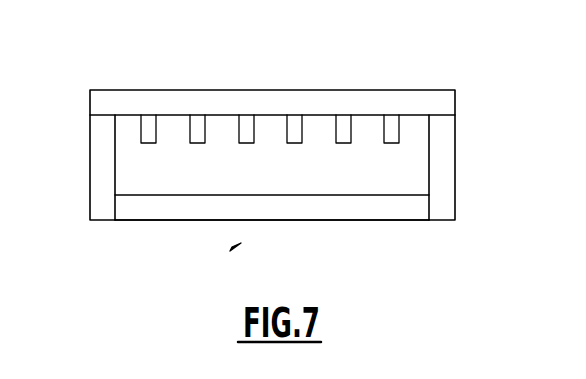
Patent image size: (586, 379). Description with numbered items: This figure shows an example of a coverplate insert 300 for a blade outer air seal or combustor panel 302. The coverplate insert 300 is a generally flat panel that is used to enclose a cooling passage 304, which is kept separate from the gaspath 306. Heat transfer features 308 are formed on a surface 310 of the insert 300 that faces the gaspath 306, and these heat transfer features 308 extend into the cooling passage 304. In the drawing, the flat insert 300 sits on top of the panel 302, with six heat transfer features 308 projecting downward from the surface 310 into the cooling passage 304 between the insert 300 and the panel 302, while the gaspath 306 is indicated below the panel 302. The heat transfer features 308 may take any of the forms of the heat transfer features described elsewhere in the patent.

The coverplate insert 300 is at (428, 90).
The BOAS or combustor panel 302 is at (402, 211).
The cooling passage 304 is at (406, 174).
The gaspath 306 is at (233, 247).
The heat transfer features 308 is at (195, 133).
The surface 310 is at (266, 119).